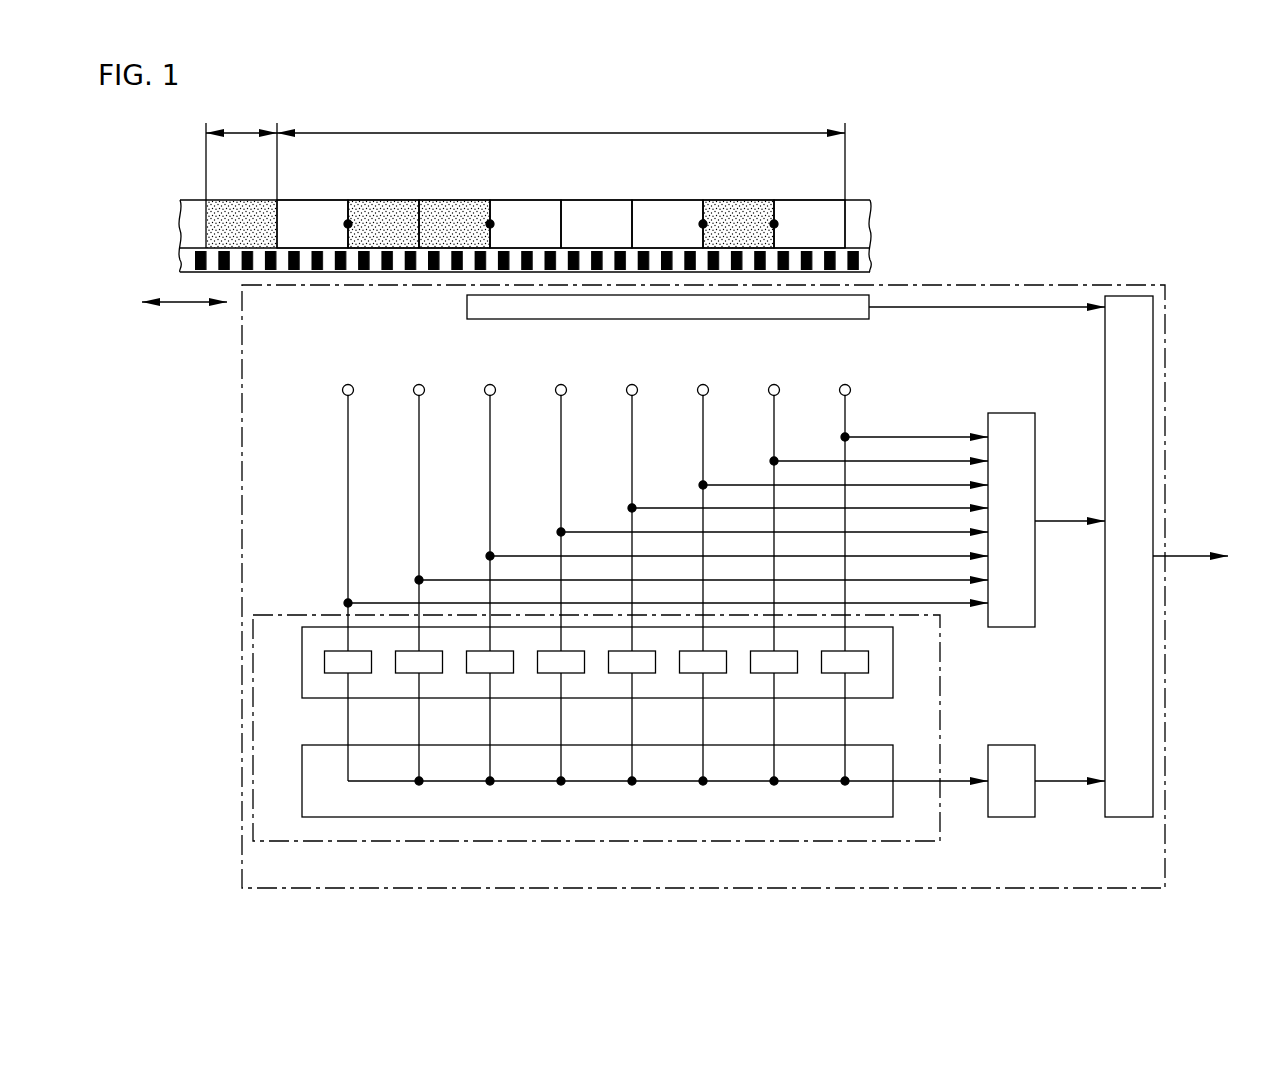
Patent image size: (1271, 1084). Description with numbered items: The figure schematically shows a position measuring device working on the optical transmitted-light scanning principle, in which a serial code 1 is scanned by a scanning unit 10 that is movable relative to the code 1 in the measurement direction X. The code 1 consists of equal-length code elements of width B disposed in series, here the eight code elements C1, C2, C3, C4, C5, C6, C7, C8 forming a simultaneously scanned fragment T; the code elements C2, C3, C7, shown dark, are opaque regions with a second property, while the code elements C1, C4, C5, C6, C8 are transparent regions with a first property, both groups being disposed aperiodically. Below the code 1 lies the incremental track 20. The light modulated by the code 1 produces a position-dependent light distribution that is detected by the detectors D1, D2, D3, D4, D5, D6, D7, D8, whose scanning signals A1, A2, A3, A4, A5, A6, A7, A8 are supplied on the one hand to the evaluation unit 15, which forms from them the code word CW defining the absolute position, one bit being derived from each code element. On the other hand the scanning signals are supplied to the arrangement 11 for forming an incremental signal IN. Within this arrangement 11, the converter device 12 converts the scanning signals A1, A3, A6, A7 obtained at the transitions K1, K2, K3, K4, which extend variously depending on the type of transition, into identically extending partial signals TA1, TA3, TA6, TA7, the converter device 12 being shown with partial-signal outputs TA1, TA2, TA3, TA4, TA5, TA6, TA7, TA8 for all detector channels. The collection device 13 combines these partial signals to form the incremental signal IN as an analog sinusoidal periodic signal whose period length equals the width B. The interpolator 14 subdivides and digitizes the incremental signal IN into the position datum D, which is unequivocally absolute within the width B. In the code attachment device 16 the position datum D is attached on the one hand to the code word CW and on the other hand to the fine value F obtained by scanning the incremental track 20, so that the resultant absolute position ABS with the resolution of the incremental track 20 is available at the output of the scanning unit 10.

The code 1 is at (882, 208).
The incremental track 20 is at (875, 262).
The scanning unit 10 is at (262, 504).
The arrangement for forming an incremental signal 11 is at (253, 657).
The converter device 12 is at (310, 689).
The collection device 13 is at (311, 780).
The interpolator 14 is at (1010, 806).
The evaluation unit 15 is at (1007, 420).
The code attachment device 16 is at (1128, 308).
The width of a code element B is at (241, 152).
The fragment of the code T is at (561, 152).
The measurement direction X is at (184, 319).
The fine value F is at (1042, 306).
The code word CW is at (1050, 520).
The absolute position ABS is at (1180, 555).
The incremental signal IN is at (913, 780).
The position datum D is at (1055, 780).
The code element C1 is at (298, 207).
The code element C2 is at (369, 207).
The code element C3 is at (440, 207).
The code element C4 is at (511, 207).
The code element C5 is at (582, 207).
The code element C6 is at (653, 207).
The code element C7 is at (724, 207).
The code element C8 is at (795, 207).
The transition K1 is at (344, 225).
The transition K2 is at (494, 224).
The transition K3 is at (699, 225).
The transition K4 is at (778, 224).
The detector D1 is at (348, 384).
The detector D2 is at (419, 384).
The detector D3 is at (490, 384).
The detector D4 is at (561, 384).
The detector D5 is at (632, 384).
The detector D6 is at (703, 384).
The detector D7 is at (774, 384).
The detector D8 is at (845, 384).
The scanning signal A1 is at (349, 413).
The scanning signal A2 is at (420, 413).
The scanning signal A3 is at (491, 413).
The scanning signal A4 is at (562, 413).
The scanning signal A5 is at (633, 413).
The scanning signal A6 is at (704, 413).
The scanning signal A7 is at (775, 413).
The scanning signal A8 is at (846, 413).
The partial signal TA1 is at (350, 737).
The partial signal TA2 is at (421, 737).
The partial signal TA3 is at (492, 737).
The partial signal TA4 is at (563, 737).
The partial signal TA5 is at (634, 737).
The partial signal TA6 is at (705, 737).
The partial signal TA7 is at (776, 737).
The partial signal TA8 is at (847, 737).